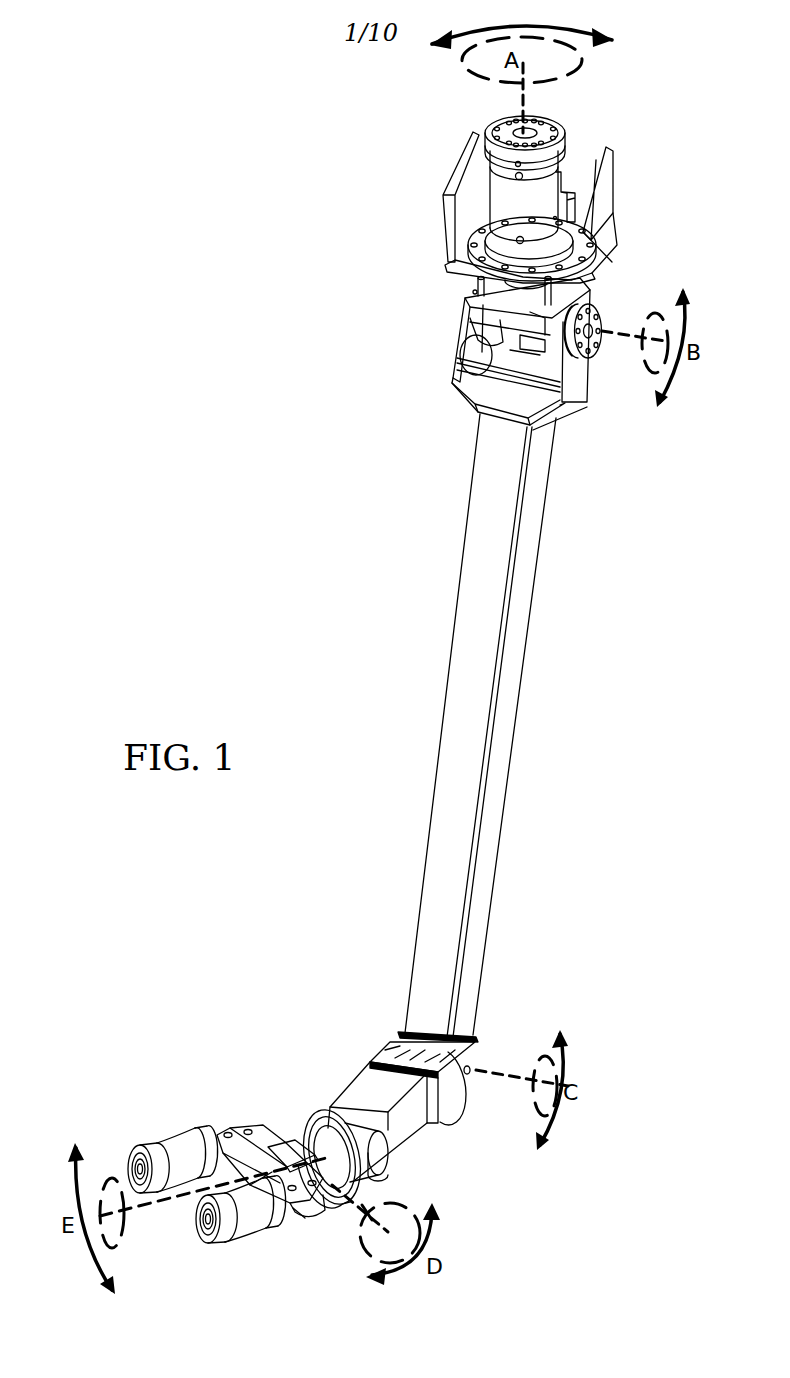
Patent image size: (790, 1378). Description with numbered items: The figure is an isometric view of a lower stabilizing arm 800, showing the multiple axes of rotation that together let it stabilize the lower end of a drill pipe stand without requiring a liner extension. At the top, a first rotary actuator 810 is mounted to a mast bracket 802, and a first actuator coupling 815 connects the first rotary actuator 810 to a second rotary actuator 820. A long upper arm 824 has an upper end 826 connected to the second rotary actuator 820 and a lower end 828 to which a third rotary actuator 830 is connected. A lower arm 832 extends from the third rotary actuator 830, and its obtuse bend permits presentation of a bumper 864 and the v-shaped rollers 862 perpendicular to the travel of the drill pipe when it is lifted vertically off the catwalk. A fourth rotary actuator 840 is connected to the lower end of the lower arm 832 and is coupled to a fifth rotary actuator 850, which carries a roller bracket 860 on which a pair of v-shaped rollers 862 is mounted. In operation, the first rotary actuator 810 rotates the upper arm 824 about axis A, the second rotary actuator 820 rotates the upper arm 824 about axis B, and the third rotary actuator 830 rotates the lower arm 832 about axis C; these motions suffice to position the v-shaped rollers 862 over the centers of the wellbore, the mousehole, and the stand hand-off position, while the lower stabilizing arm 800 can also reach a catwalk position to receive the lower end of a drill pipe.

The lower stabilizing arm 800 is at (371, 618).
The mast bracket 802 is at (614, 192).
The first rotary actuator 810 is at (560, 135).
The first actuator coupling 815 is at (462, 292).
The second rotary actuator 820 is at (462, 368).
The upper arm 824 is at (523, 665).
The upper end 826 is at (598, 385).
The lower end 828 is at (478, 1040).
The third rotary actuator 830 is at (385, 1050).
The lower arm 832 is at (412, 1143).
The fourth rotary actuator 840 is at (393, 1160).
The fifth rotary actuator 850 is at (298, 1142).
The roller bracket 860 is at (315, 1220).
The v-shaped rollers 862 is at (157, 1142).
The bumper 864 is at (228, 1128).